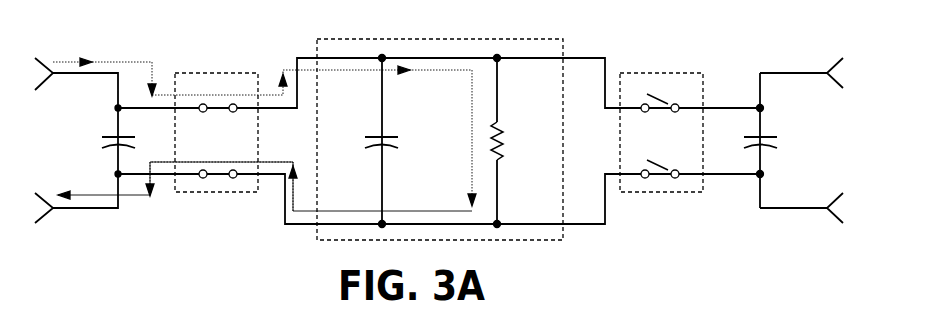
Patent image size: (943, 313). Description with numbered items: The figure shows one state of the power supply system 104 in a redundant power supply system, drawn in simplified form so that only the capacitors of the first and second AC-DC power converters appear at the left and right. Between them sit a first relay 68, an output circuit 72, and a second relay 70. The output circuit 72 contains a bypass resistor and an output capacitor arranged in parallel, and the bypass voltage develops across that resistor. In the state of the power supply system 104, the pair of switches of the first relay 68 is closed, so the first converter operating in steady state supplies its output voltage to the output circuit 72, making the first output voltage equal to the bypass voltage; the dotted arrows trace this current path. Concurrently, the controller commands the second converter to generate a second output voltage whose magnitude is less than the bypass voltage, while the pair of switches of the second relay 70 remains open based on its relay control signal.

The first relay 68 is at (218, 73).
The second relay 70 is at (665, 73).
The output circuit 72 is at (430, 40).
The state of the power supply system 104 is at (176, 226).